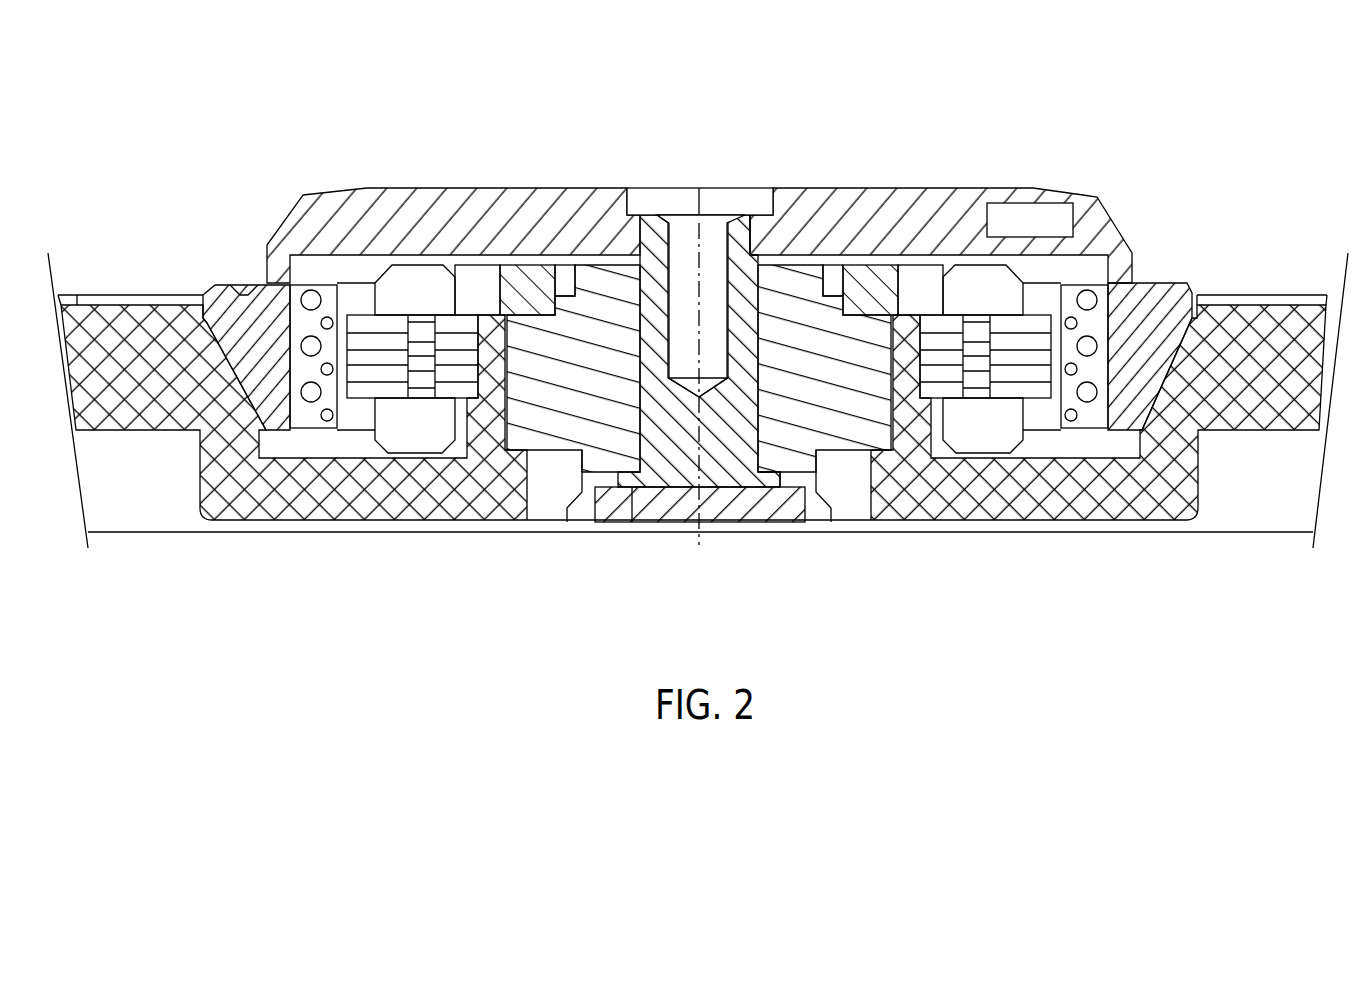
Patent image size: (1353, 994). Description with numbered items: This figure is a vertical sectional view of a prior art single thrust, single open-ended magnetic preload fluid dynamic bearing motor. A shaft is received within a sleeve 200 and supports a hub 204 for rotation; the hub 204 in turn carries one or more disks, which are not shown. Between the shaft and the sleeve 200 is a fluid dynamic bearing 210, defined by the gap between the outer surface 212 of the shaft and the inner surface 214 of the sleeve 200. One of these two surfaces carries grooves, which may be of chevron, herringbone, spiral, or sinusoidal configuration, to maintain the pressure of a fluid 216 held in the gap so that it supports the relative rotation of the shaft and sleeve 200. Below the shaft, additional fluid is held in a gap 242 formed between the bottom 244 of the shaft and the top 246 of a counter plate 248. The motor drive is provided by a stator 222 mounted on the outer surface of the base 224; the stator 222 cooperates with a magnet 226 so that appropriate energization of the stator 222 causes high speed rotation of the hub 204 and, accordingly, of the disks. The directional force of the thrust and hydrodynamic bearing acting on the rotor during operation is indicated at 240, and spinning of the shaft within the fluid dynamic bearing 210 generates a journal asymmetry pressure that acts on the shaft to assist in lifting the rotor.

The sleeve 200 is at (565, 405).
The hub 204 is at (487, 203).
The fluid dynamic bearing 210 is at (765, 285).
The outer surface 212 is at (758, 262).
The inner surface 214 is at (775, 297).
The fluid 216 is at (637, 327).
The stator 222 is at (425, 433).
The base 224 is at (245, 503).
The magnet 226 is at (312, 415).
The directional force 240 is at (699, 538).
The gap 242 is at (740, 503).
The bottom 244 is at (770, 477).
The top 246 is at (642, 492).
The counter plate 248 is at (665, 505).